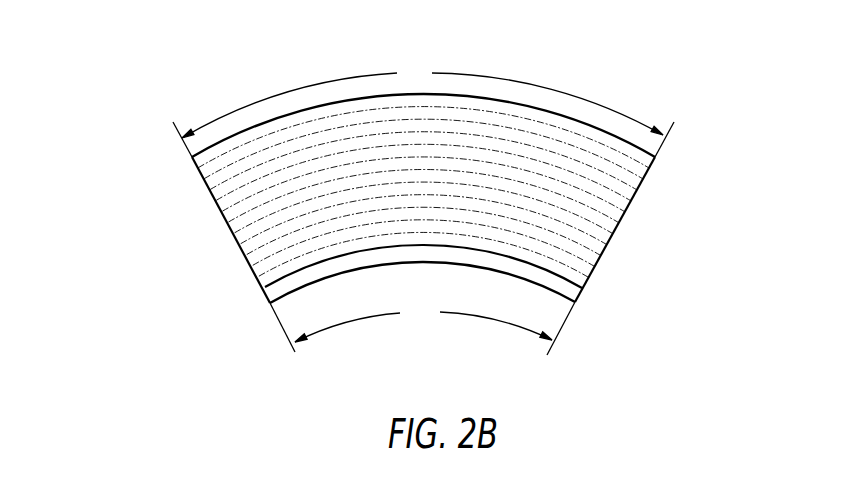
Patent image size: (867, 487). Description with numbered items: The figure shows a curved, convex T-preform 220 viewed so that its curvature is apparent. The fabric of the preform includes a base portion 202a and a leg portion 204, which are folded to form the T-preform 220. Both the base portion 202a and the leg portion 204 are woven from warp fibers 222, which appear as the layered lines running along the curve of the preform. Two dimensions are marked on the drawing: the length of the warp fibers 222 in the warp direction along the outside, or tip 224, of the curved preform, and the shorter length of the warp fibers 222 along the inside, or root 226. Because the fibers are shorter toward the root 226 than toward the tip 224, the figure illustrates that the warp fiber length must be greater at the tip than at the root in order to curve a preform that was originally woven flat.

The T-preform 220 is at (180, 263).
The tip 224 is at (550, 112).
The leg portion 204 is at (578, 182).
The warp fibers 222 is at (577, 222).
The root 226 is at (330, 270).
The base portion 202a is at (533, 283).